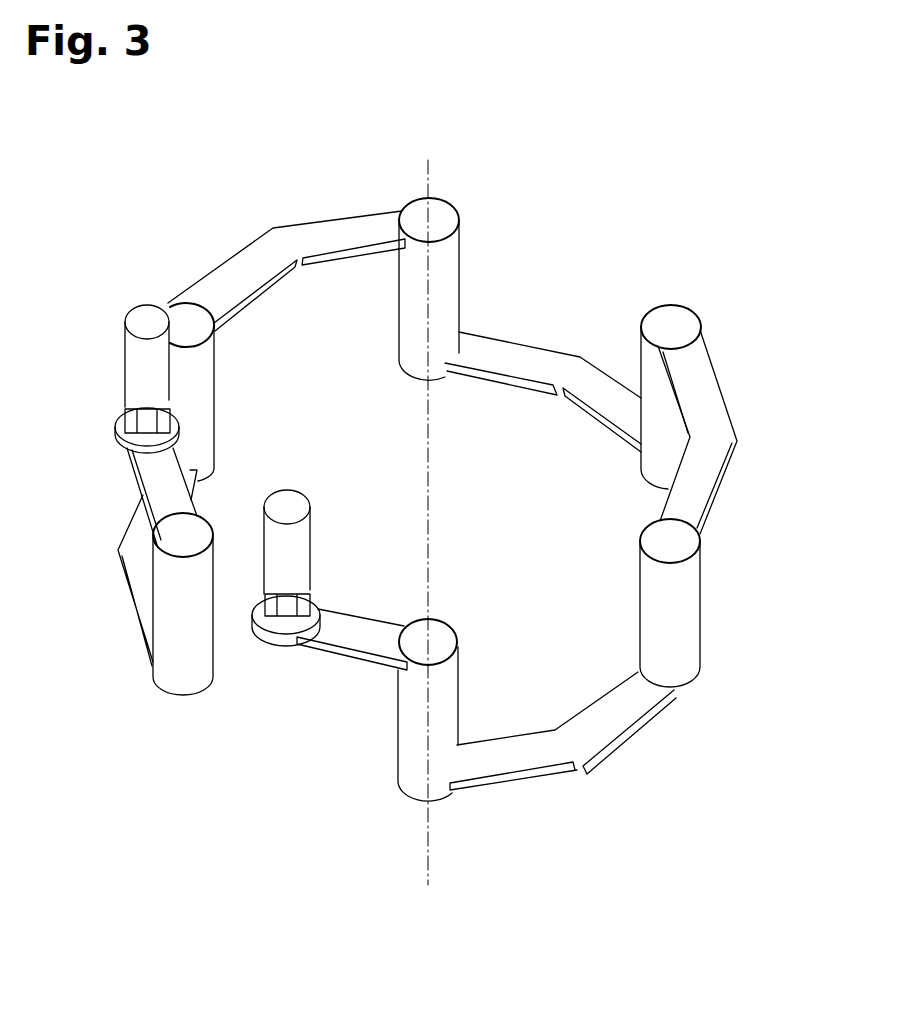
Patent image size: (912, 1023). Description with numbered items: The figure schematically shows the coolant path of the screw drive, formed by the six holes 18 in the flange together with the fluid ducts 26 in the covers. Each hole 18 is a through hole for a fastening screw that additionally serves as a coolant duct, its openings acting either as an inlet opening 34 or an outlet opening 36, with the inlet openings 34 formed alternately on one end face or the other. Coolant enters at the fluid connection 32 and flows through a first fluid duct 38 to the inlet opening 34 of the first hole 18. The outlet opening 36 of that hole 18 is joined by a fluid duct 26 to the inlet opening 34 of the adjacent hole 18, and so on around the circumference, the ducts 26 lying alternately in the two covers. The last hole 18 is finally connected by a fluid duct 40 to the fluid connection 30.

The hole 18 is at (447, 268).
The fluid duct 26 is at (258, 257).
The fluid connection 30 is at (140, 363).
The fluid connection 32 is at (293, 550).
The inlet opening 34 is at (182, 320).
The outlet opening 36 is at (438, 217).
The first fluid duct 38 is at (347, 635).
The fluid duct 40 is at (150, 473).